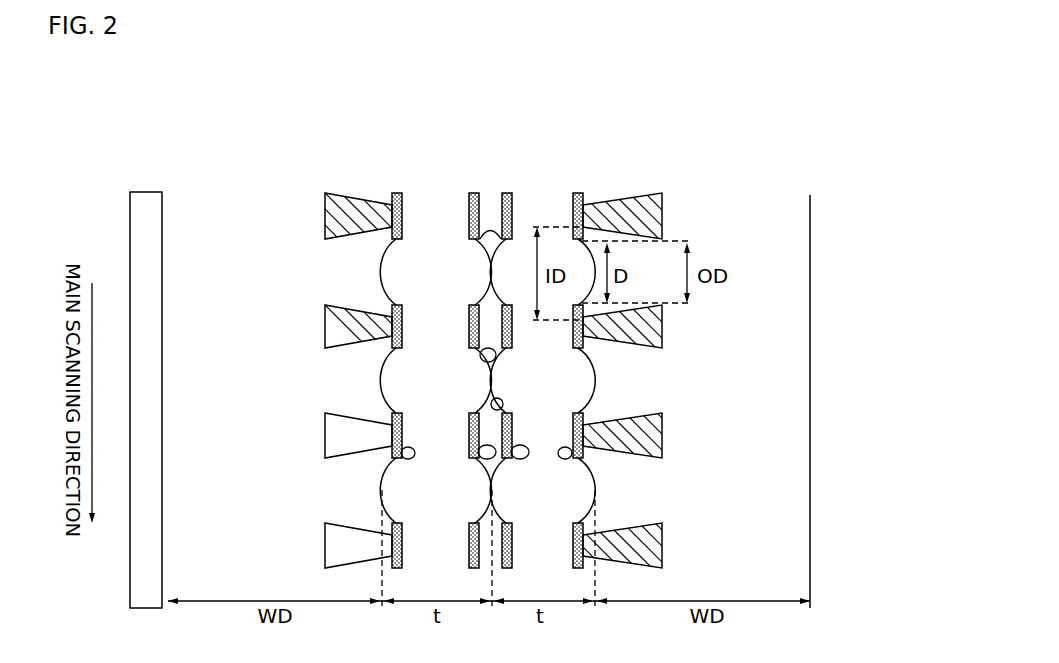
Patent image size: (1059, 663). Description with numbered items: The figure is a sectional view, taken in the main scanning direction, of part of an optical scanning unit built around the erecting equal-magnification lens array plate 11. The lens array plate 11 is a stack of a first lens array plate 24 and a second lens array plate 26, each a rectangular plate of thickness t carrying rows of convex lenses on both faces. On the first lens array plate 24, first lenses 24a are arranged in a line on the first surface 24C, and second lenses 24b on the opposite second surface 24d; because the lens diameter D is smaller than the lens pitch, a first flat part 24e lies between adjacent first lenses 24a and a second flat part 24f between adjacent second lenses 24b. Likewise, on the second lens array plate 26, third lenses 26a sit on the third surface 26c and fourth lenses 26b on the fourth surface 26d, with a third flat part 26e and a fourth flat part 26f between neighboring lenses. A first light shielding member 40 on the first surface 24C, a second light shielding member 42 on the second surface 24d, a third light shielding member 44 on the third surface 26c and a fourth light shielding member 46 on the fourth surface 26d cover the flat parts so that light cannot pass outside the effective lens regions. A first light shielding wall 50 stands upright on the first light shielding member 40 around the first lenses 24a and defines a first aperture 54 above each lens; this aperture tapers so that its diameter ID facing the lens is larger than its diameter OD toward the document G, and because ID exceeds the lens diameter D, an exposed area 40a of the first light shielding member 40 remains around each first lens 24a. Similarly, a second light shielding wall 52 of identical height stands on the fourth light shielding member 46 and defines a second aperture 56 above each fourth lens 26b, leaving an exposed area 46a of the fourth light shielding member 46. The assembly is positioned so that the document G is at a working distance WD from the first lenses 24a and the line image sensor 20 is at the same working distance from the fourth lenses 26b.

The erecting equal-magnification lens array plate 11 is at (343, 124).
The line image sensor 20 is at (146, 192).
The first lens array plate 24 is at (540, 210).
The first lens 24a is at (595, 362).
The second lens 24b is at (500, 410).
The first surface 24C is at (614, 383).
The second surface 24d is at (494, 232).
The first flat part 24e is at (515, 448).
The second flat part 24f is at (515, 465).
The second lens array plate 26 is at (428, 232).
The third lens 26a is at (480, 353).
The fourth lens 26b is at (380, 390).
The third surface 26c is at (481, 232).
The fourth surface 26d is at (358, 384).
The third flat part 26e is at (481, 465).
The fourth flat part 26f is at (470, 440).
The first light shielding member 40 is at (583, 452).
The first light shielding member exposed area 40a is at (592, 230).
The second light shielding member 42 is at (588, 472).
The third light shielding member 44 is at (392, 522).
The fourth light shielding member 46 is at (402, 458).
The fourth light shielding member exposed area 46a is at (392, 235).
The first light shielding wall 50 is at (663, 212).
The second light shielding wall 52 is at (325, 216).
The first aperture 54 is at (643, 277).
The second aperture 56 is at (338, 268).
The document G is at (810, 378).